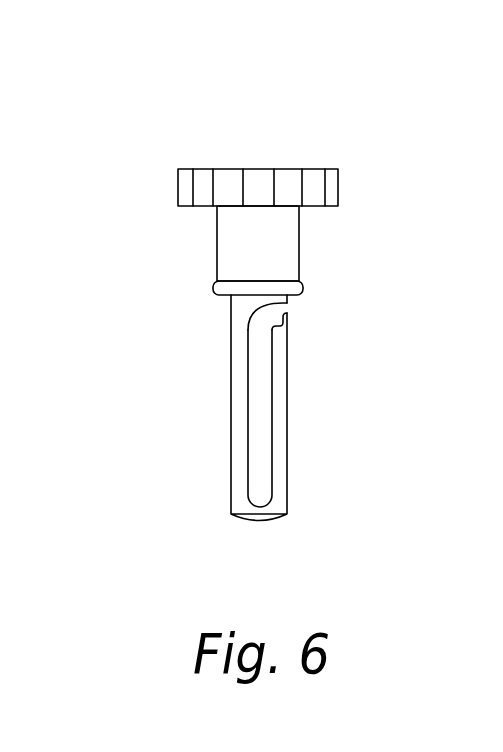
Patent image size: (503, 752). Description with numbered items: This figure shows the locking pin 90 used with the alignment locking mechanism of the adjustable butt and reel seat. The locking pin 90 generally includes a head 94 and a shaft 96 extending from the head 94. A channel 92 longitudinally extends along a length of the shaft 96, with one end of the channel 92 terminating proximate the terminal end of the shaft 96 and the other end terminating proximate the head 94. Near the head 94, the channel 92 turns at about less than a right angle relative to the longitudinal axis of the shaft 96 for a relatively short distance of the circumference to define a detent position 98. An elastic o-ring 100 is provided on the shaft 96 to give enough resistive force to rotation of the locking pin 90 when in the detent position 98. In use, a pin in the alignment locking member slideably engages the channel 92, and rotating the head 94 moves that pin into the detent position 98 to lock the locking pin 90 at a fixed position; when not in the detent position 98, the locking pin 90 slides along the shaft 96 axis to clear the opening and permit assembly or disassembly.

The locking pin 90 is at (357, 181).
The head 94 is at (177, 186).
The shaft 96 is at (282, 450).
The channel 92 is at (260, 410).
The detent position 98 is at (291, 315).
The elastic o-ring 100 is at (248, 291).